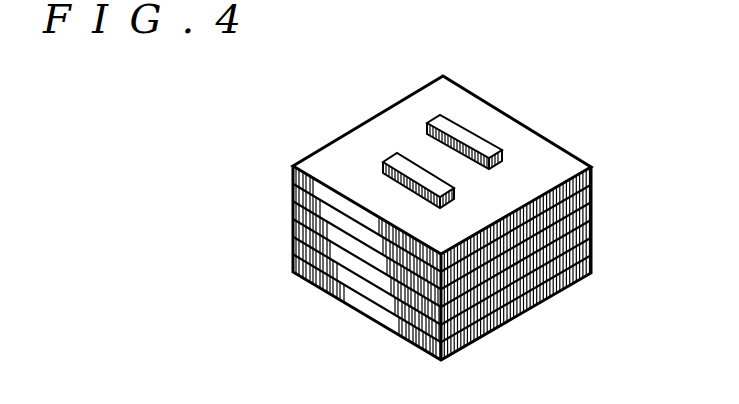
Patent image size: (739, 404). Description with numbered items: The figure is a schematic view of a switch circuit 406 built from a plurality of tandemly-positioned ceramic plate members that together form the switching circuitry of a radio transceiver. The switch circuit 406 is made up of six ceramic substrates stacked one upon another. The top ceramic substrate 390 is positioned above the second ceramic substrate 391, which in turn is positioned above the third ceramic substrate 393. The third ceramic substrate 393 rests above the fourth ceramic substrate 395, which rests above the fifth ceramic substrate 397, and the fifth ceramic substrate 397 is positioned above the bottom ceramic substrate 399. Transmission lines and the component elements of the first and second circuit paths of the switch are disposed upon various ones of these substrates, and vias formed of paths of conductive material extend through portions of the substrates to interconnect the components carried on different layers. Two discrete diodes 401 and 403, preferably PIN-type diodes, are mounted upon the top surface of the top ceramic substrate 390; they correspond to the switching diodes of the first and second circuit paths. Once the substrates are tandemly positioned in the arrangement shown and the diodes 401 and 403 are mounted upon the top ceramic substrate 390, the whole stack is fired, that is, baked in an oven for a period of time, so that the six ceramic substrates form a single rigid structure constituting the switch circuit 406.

The switch circuit 406 is at (253, 80).
The top ceramic substrate 390 is at (293, 168).
The second ceramic substrate 391 is at (292, 190).
The third ceramic substrate 393 is at (292, 208).
The fourth ceramic substrate 395 is at (292, 226).
The fifth ceramic substrate 397 is at (292, 245).
The bottom ceramic substrate 399 is at (292, 264).
The discrete diode 401 is at (440, 113).
The discrete diode 403 is at (397, 153).